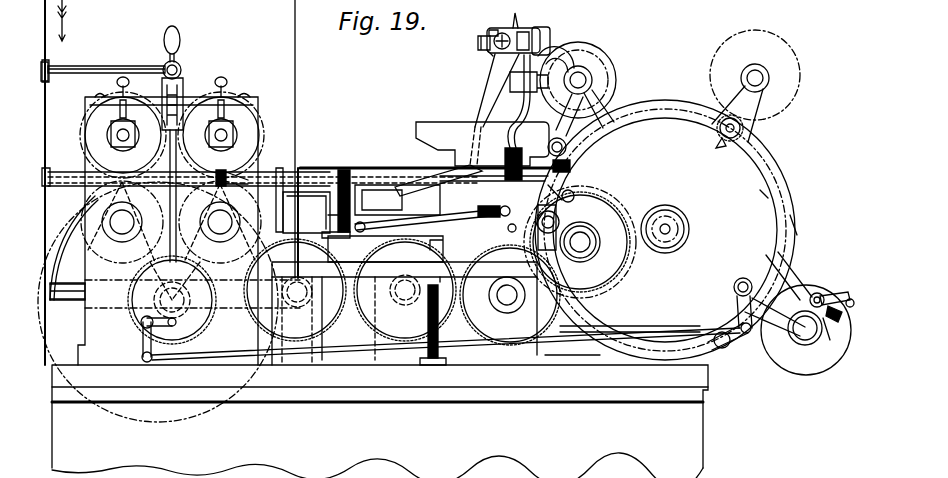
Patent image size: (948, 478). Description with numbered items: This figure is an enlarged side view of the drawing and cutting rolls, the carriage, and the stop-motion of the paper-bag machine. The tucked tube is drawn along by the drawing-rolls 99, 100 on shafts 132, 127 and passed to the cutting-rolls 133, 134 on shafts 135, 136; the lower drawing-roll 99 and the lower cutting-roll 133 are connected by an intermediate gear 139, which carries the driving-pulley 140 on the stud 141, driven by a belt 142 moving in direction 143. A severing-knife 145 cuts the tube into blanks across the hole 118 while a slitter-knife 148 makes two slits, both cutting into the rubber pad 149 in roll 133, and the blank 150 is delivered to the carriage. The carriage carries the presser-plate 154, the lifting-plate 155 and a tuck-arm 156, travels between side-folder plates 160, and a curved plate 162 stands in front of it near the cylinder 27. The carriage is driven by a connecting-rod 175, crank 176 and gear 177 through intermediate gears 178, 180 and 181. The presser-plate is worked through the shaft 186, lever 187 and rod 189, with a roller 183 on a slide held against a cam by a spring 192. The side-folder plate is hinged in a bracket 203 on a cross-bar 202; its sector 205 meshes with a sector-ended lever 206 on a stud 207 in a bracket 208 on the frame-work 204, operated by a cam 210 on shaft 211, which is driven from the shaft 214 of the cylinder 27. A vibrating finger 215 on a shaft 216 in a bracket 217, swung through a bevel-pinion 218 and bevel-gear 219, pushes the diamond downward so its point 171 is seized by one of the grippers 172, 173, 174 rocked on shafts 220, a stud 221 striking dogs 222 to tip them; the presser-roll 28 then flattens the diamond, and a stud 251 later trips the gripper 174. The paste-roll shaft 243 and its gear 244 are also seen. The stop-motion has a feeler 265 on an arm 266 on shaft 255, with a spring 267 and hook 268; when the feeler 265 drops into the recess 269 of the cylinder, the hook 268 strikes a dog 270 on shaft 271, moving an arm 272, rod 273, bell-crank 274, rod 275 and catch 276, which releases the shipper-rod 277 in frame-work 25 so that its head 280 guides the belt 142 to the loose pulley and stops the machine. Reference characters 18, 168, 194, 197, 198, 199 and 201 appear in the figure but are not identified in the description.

The base 18 is at (380, 421).
The frame-work 25 is at (169, 258).
The cylinder 27 is at (665, 229).
The presser-roll 28 is at (311, 212).
The lower drawing-roll 99 is at (122, 222).
The drawing-roll 100 is at (123, 127).
The hole 118 is at (306, 212).
The shaft 127 is at (116, 130).
The shaft 132 is at (122, 222).
The lower cutting-roll 133 is at (220, 222).
The cutting-roll 134 is at (221, 127).
The shaft 135 is at (220, 222).
The shaft 136 is at (230, 128).
The intermediate gear 139 is at (171, 280).
The driving-pulley 140 is at (67, 291).
The stud 141 is at (160, 298).
The belt 142 is at (55, 182).
The direction 143 is at (72, 20).
The severing-knife 145 is at (237, 170).
The slitter-knife 148 is at (212, 171).
The rubber pad 149 is at (220, 222).
The blank 150 is at (298, 184).
The presser-plate 154 is at (376, 185).
The lifting-plate 155 is at (492, 190).
The tuck-arm 156 is at (438, 175).
The side-folder plate 160 is at (482, 144).
The curved plate 162 is at (574, 192).
The spring 168 is at (483, 219).
The point of the diamond 171 is at (552, 217).
The gripper 172 is at (553, 218).
The gripper 173 is at (745, 114).
The gripper 174 is at (712, 333).
The connecting-rod 175 is at (407, 228).
The crank 176 is at (560, 232).
The gear 177 is at (580, 242).
The intermediate gear 178 is at (510, 295).
The intermediate gear 180 is at (405, 290).
The intermediate gear 181 is at (295, 290).
The roller 183 is at (502, 233).
The shaft 186 is at (343, 170).
The lever 187 is at (382, 201).
The rod 189 is at (427, 221).
The spring 192 is at (497, 218).
The rod 194 is at (430, 183).
The plate 197 is at (328, 231).
The box 198 is at (386, 249).
The pin 199 is at (326, 218).
The arm 201 is at (566, 113).
The cross-bar 202 is at (560, 141).
The bracket 203 is at (566, 165).
The frame-work 204 is at (577, 91).
The sector 205 is at (500, 164).
The sector-ended lever 206 is at (509, 146).
The stud 207 is at (477, 42).
The bracket 208 is at (546, 30).
The cam 210 is at (592, 46).
The shaft 211 is at (578, 80).
The shaft 214 is at (670, 227).
The vibrating finger 215 is at (486, 83).
The shaft 216 is at (490, 29).
The bracket 217 is at (486, 55).
The bevel-pinion 218 is at (503, 26).
The bevel-gear 219 is at (518, 22).
The shaft 220 is at (720, 134).
The stud 221 is at (566, 185).
The dog 222 is at (710, 150).
The shaft 243 is at (755, 78).
The gear 244 is at (755, 75).
The stud 251 is at (749, 190).
The shaft 255 is at (803, 334).
The feeler 265 is at (837, 293).
The arm 266 is at (816, 292).
The spring 267 is at (828, 336).
The hook 268 is at (836, 323).
The recess 269 is at (796, 222).
The dog 270 is at (778, 294).
The shaft 271 is at (734, 283).
The arm 272 is at (737, 300).
The rod 273 is at (446, 344).
The bell-crank 274 is at (153, 342).
The rod 275 is at (264, 182).
The catch 276 is at (183, 82).
The shipper-rod 277 is at (106, 70).
The head 280 is at (50, 68).